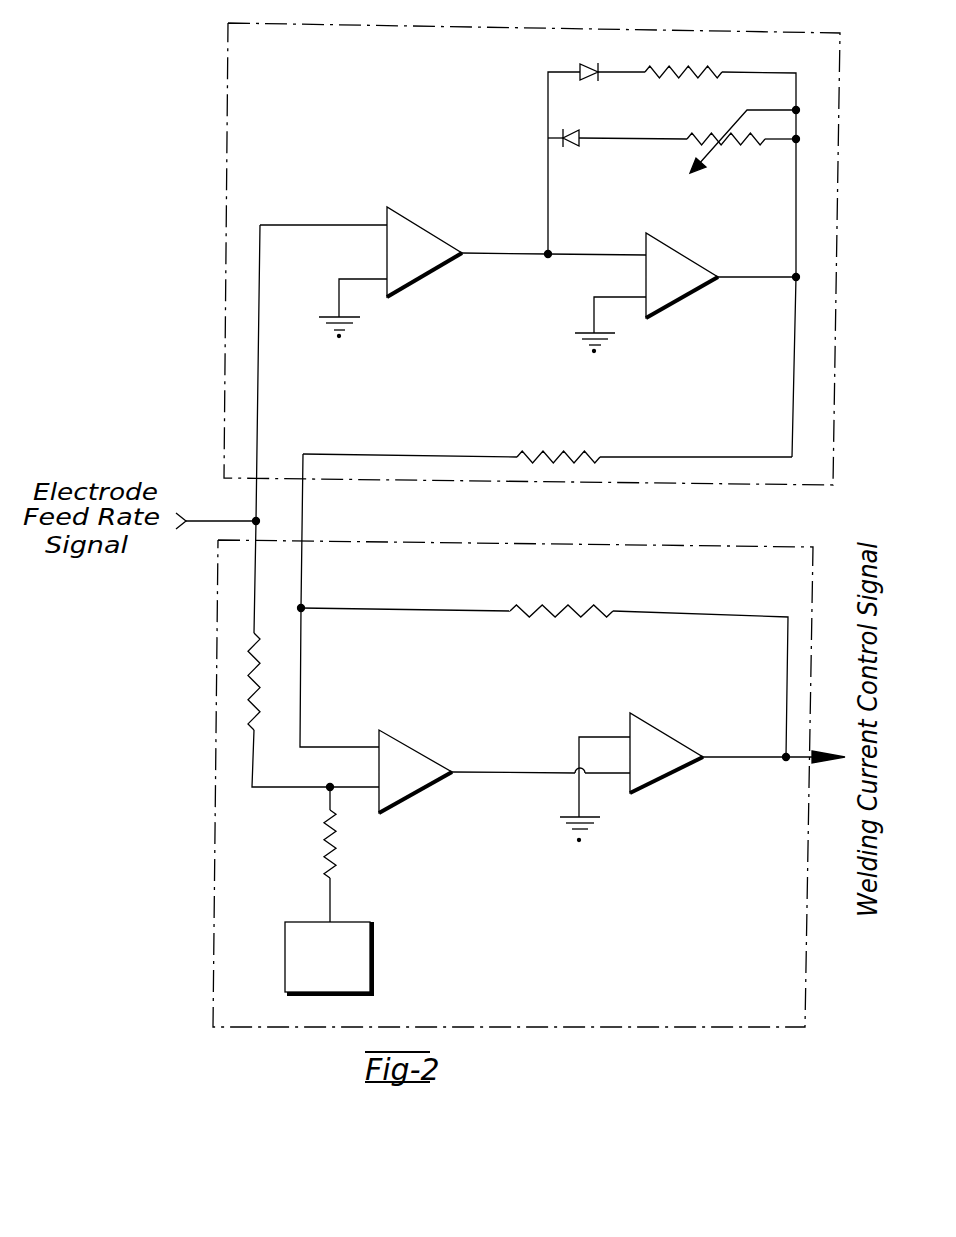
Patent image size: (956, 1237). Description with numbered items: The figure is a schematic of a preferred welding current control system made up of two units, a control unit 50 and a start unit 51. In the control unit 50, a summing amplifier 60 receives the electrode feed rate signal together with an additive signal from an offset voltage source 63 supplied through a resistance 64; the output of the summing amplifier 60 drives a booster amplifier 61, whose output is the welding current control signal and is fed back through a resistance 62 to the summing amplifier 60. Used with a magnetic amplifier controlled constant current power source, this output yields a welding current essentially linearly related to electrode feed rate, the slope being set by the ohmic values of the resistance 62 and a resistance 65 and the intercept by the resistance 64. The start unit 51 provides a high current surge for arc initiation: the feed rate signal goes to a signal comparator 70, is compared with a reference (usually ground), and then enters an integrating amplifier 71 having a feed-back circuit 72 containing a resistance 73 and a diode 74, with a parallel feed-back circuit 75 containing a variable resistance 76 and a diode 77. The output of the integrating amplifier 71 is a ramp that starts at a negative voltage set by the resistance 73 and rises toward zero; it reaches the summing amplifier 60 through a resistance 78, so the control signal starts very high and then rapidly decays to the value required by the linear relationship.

The control unit 50 is at (216, 822).
The start unit 51 is at (226, 240).
The summing amplifier 60 is at (412, 750).
The booster amplifier 61 is at (655, 726).
The resistance 62 is at (602, 608).
The offset voltage source 63 is at (373, 953).
The resistance 64 is at (338, 853).
The resistance 65 is at (258, 683).
The signal comparator 70 is at (402, 215).
The integrating amplifier 71 is at (665, 243).
The feed-back circuit 72 is at (770, 73).
The resistance 73 is at (722, 72).
The diode 74 is at (590, 63).
The feed-back circuit 75 is at (676, 141).
The variable resistance 76 is at (757, 141).
The diode 77 is at (569, 147).
The resistance 78 is at (578, 452).